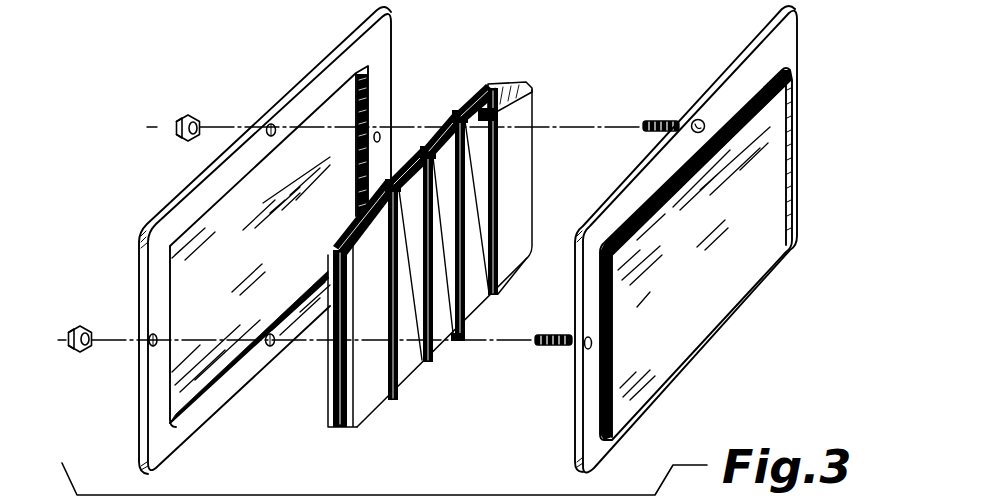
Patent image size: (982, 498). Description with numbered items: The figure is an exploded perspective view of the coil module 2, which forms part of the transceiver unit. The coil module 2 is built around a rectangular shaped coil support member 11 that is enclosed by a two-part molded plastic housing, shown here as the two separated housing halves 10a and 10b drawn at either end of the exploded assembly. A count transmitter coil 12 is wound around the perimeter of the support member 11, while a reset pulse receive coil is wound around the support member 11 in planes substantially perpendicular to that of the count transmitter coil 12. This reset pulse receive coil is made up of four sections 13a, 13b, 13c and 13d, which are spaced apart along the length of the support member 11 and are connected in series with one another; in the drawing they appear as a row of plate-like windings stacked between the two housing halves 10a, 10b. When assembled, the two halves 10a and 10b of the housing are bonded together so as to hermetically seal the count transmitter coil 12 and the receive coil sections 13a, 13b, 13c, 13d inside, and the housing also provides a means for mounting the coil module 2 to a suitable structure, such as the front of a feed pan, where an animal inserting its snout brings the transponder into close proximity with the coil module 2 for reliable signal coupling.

The coil module 2 is at (550, 58).
The molded plastic housing part 10a is at (245, 276).
The molded plastic housing part 10b is at (746, 278).
The coil support member 11 is at (380, 323).
The count transmitter coil 12 is at (345, 428).
The reset pulse receive coil section 13a is at (397, 400).
The reset pulse receive coil section 13b is at (426, 362).
The reset pulse receive coil section 13c is at (455, 340).
The reset pulse receive coil section 13d is at (495, 296).